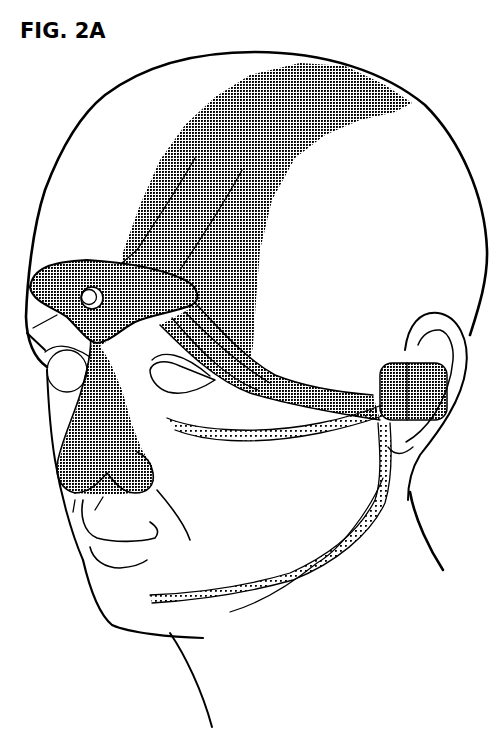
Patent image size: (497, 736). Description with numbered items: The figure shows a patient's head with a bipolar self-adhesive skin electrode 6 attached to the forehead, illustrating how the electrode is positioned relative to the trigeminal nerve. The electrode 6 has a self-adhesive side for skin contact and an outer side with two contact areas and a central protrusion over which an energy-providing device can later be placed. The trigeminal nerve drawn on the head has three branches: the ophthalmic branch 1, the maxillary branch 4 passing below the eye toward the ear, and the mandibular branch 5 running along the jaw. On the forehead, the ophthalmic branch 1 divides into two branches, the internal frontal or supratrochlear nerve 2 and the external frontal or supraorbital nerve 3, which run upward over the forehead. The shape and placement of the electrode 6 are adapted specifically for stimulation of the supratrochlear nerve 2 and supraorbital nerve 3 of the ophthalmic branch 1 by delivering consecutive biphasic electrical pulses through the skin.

The ophthalmic branch 1 is at (270, 380).
The internal frontal (supratrochlear) nerve 2 is at (160, 207).
The external frontal (supraorbital) nerve 3 is at (207, 223).
The maxillary branch 4 is at (227, 437).
The mandibular branch 5 is at (300, 553).
The bipolar self-adhesive skin electrode 6 is at (65, 273).